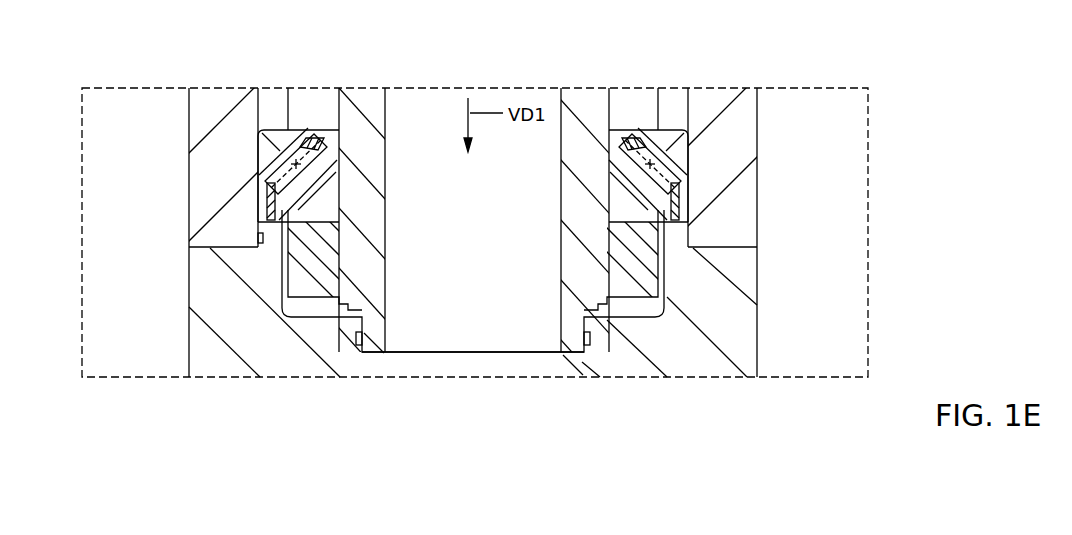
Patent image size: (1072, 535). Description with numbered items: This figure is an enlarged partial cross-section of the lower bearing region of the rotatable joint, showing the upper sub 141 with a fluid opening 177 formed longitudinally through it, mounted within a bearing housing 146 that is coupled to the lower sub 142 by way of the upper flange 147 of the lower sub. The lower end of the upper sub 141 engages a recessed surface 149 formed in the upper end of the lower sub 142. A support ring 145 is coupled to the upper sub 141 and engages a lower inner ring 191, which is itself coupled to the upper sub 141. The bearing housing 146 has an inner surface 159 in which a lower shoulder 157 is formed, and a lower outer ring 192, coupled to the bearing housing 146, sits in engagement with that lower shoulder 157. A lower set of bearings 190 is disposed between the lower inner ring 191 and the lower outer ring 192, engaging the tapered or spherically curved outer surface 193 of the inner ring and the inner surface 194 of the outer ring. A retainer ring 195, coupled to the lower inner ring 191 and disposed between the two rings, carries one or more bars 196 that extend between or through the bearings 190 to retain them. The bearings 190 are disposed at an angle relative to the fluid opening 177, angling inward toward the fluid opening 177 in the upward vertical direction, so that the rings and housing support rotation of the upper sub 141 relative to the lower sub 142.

The upper sub 141 is at (378, 98).
The lower sub 142 is at (272, 353).
The support ring 145 is at (643, 270).
The bearing housing 146 is at (217, 187).
The upper flange 147 is at (227, 318).
The recessed surface 149 is at (318, 318).
The lower shoulder 157 is at (670, 125).
The inner surface 159 is at (643, 100).
The fluid opening 177 is at (508, 332).
The bearings 190 is at (278, 152).
The lower inner ring 191 is at (618, 183).
The lower outer ring 192 is at (270, 133).
The outer surface 193 is at (615, 205).
The inner surface 194 is at (688, 168).
The retainer ring 195 is at (678, 195).
The bars 196 is at (303, 176).